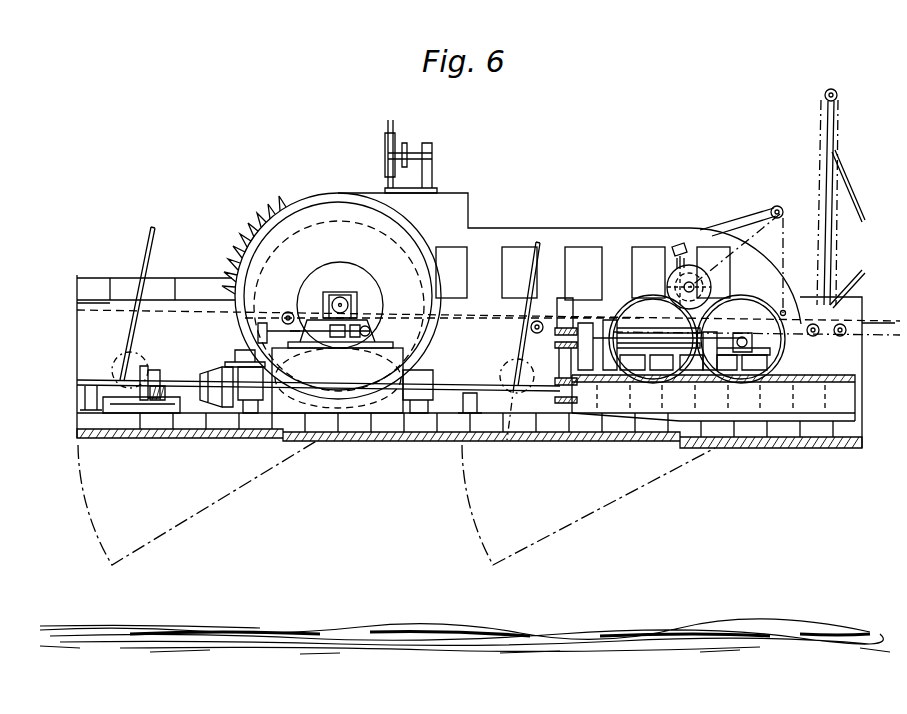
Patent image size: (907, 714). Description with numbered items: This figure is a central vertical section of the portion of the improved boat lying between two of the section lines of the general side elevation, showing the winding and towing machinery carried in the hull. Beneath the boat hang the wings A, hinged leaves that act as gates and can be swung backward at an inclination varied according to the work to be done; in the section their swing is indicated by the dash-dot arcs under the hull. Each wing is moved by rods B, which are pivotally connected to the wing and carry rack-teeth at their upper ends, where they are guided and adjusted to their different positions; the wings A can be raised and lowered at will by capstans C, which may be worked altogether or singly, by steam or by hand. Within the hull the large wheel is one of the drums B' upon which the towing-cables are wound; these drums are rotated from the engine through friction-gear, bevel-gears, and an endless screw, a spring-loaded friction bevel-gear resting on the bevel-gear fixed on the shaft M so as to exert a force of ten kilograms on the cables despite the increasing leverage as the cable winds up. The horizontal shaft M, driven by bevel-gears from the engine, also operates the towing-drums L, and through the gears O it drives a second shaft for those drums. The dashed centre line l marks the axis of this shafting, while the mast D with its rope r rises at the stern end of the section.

The wing A is at (467, 387).
The rod B is at (327, 333).
The drum B' is at (331, 296).
The capstan C is at (323, 385).
The mast D is at (836, 198).
The towing-drum L is at (697, 339).
The horizontal shaft M is at (423, 362).
The gear O is at (554, 350).
The center line l is at (488, 320).
The rope r is at (755, 261).